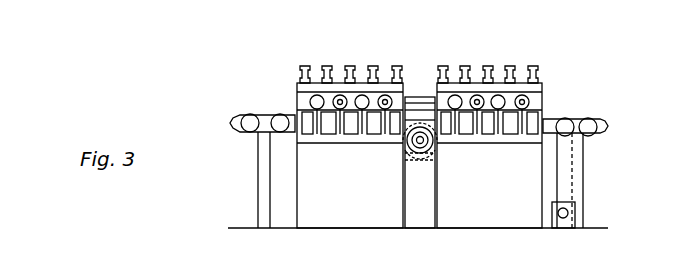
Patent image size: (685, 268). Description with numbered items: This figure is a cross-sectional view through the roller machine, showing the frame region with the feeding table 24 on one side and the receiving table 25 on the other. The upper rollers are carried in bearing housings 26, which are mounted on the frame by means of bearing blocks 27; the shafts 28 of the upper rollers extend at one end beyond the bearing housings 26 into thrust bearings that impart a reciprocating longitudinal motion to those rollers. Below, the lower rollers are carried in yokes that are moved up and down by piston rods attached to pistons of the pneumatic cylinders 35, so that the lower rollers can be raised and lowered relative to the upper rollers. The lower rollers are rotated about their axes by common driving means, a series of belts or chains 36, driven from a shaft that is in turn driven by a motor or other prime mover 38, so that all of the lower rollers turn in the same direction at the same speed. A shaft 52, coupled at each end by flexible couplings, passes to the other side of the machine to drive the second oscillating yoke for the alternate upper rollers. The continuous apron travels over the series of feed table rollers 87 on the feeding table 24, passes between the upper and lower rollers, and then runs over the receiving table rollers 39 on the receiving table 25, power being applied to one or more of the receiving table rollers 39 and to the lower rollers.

The feeding table 24 is at (262, 180).
The receiving table 25 is at (585, 163).
The bearing housings 26 is at (340, 95).
The bearing blocks 27 is at (298, 83).
The shafts of upper rollers 28 is at (377, 136).
The pneumatic cylinders 35 is at (328, 68).
The belts or chains 36 is at (420, 95).
The motor or other prime mover 38 is at (563, 228).
The receiving table rollers 39 is at (565, 118).
The shaft 52 is at (413, 150).
The feed table rollers 87 is at (275, 113).